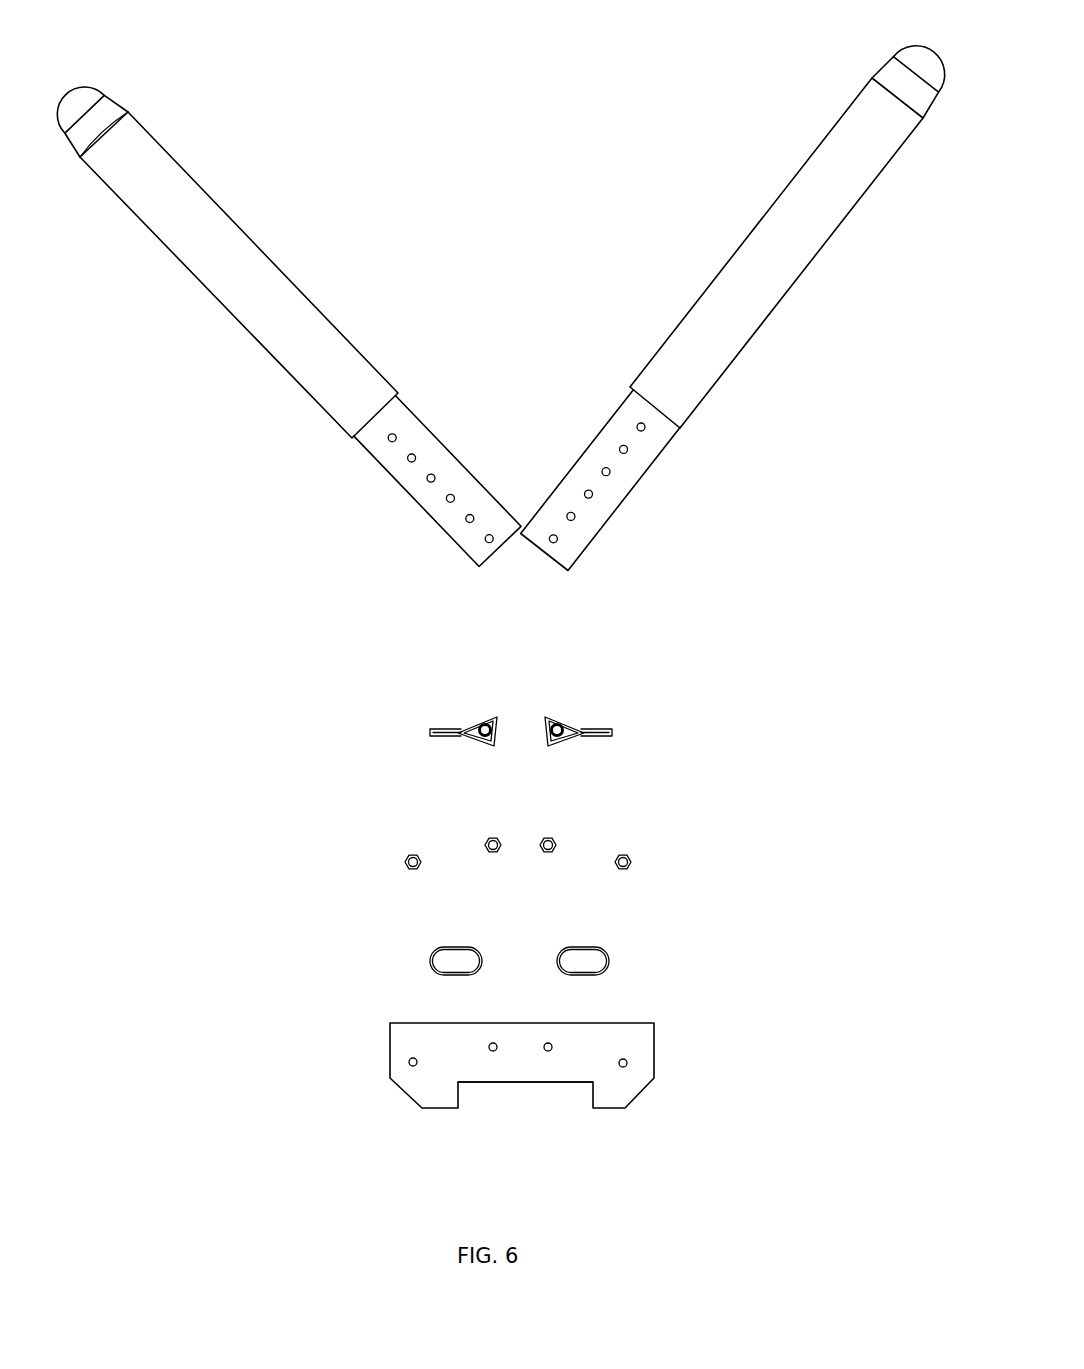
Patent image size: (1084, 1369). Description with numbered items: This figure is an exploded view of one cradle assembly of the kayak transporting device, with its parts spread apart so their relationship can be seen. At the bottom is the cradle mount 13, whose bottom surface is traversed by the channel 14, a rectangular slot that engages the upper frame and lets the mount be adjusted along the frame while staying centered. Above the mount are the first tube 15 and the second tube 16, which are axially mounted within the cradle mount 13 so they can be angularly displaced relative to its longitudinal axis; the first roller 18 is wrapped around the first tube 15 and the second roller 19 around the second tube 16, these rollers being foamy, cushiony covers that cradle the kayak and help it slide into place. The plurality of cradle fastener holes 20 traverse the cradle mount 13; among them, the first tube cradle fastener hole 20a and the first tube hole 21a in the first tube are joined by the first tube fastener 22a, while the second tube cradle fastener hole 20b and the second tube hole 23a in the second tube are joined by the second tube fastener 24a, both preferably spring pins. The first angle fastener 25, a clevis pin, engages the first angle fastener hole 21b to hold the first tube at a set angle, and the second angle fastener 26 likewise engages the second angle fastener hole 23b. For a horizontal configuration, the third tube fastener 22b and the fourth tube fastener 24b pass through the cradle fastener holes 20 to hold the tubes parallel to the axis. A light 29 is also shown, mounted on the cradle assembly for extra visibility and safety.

The cradle mount 13 is at (625, 1090).
The channel 14 is at (485, 1093).
The first tube 15 is at (405, 422).
The second tube 16 is at (890, 80).
The first roller 18 is at (288, 297).
The second roller 19 is at (798, 203).
The plurality of cradle fastener holes 20 is at (413, 1058).
The first tube cradle fastener hole 20a is at (493, 1052).
The second tube cradle fastener hole 20b is at (548, 1047).
The first tube hole 21a is at (489, 544).
The first angle fastener hole 21b is at (468, 524).
The first tube fastener 22a is at (493, 853).
The third tube fastener 22b is at (406, 862).
The second tube hole 23a is at (553, 542).
The second angle fastener hole 23b is at (568, 522).
The second tube fastener 24a is at (549, 853).
The fourth tube fastener 24b is at (632, 855).
The first angle fastener 25 is at (430, 733).
The second angle fastener 26 is at (612, 733).
The light 29 is at (438, 960).